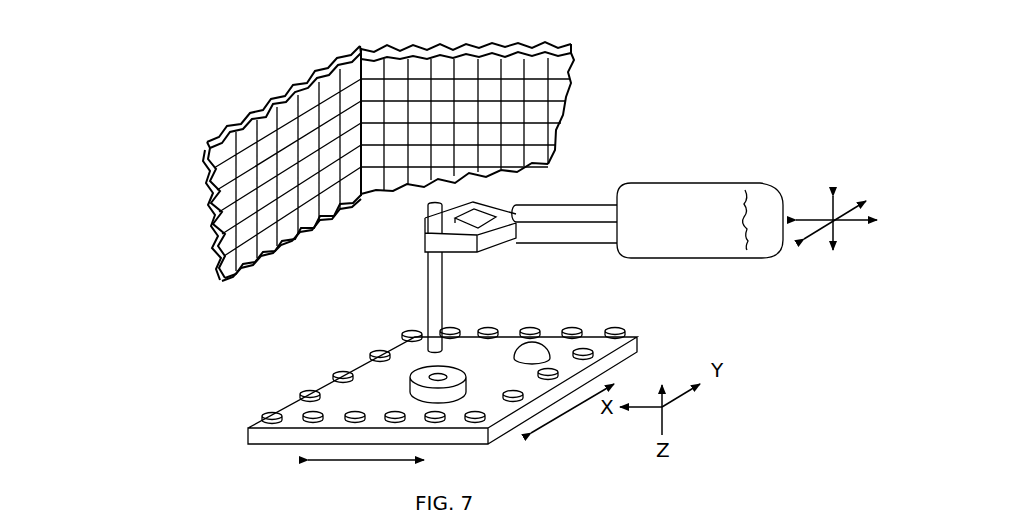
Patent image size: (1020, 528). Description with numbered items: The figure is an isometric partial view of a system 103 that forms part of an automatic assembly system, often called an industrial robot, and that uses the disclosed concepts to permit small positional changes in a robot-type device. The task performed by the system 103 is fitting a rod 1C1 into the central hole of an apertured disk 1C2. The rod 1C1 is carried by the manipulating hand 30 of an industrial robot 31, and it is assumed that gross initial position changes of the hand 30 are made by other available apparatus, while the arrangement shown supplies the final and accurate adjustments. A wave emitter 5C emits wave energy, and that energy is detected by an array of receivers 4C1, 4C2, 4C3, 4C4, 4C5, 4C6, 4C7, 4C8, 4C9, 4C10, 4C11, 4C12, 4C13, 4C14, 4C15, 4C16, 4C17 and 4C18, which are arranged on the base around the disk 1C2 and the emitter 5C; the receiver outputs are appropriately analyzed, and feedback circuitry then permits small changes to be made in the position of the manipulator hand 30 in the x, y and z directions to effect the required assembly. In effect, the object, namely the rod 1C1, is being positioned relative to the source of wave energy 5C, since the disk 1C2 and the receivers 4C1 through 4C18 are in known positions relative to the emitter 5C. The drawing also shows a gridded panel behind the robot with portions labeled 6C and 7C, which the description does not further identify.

The grid panel 6C is at (412, 147).
The panel surface 7C is at (586, 108).
The system 103 is at (614, 184).
The industrial robot 31 is at (710, 192).
The manipulating hand 30 is at (470, 245).
The rod 1C1 is at (430, 277).
The apertured disk 1C2 is at (408, 383).
The wave emitter 5C is at (557, 323).
The receiver 4C1 is at (386, 307).
The receiver 4C2 is at (356, 333).
The receiver 4C3 is at (310, 360).
The receiver 4C4 is at (272, 384).
The receiver 4C5 is at (232, 424).
The receiver 4C6 is at (276, 447).
The receiver 4C7 is at (356, 456).
The receiver 4C8 is at (437, 450).
The receiver 4C9 is at (468, 396).
The receiver 4C10 is at (516, 446).
The receiver 4C11 is at (561, 423).
The receiver 4C12 is at (612, 372).
The receiver 4C13 is at (642, 344).
The receiver 4C14 is at (658, 318).
The receiver 4C15 is at (618, 307).
The receiver 4C16 is at (550, 300).
The receiver 4C17 is at (506, 317).
The receiver 4C18 is at (467, 309).